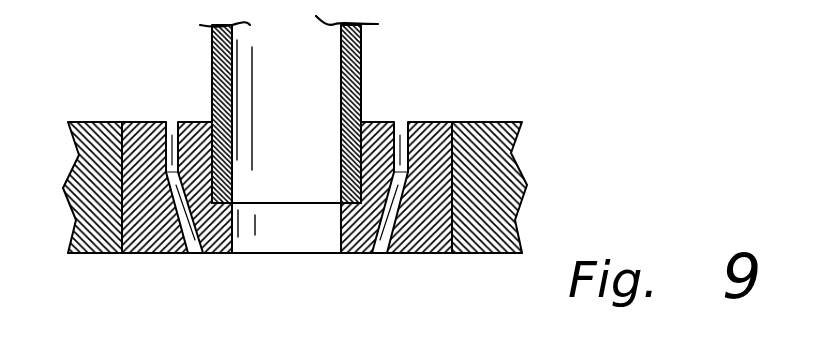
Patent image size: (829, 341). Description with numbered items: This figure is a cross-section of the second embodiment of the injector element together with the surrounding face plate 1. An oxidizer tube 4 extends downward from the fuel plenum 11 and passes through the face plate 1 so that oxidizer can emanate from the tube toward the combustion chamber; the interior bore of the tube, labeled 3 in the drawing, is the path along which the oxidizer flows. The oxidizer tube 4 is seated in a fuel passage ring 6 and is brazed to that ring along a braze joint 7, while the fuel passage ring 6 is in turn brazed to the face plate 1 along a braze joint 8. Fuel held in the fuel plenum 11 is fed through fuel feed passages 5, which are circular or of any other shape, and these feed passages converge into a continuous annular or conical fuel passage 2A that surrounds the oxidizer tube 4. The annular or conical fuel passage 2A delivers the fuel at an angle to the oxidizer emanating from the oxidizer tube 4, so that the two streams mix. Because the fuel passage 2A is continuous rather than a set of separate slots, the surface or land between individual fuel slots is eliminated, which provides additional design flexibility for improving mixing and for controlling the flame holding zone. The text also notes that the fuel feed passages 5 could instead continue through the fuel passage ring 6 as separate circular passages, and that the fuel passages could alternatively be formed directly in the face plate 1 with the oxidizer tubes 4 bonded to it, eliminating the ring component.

The face plate 1 is at (107, 257).
The continuous annular/conical fuel passage 2A is at (398, 207).
The bore of tube 3 is at (296, 97).
The oxidizer tube 4 is at (361, 57).
The fuel feed passage 5 is at (160, 143).
The fuel passage ring 6 is at (433, 122).
The braze joint 7 is at (212, 122).
The braze joint 8 is at (123, 257).
The fuel plenum 11 is at (119, 54).